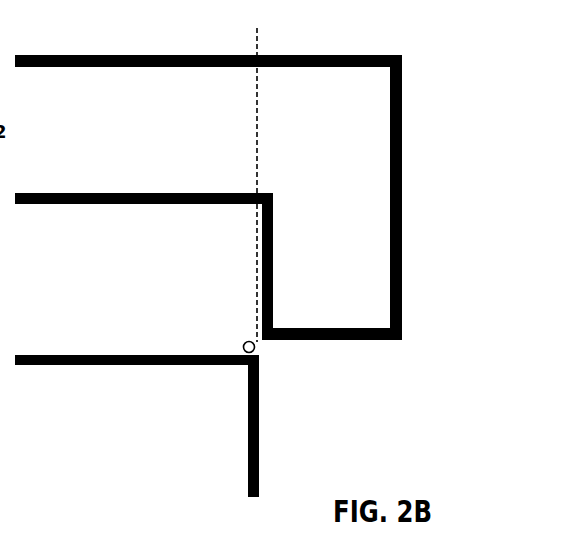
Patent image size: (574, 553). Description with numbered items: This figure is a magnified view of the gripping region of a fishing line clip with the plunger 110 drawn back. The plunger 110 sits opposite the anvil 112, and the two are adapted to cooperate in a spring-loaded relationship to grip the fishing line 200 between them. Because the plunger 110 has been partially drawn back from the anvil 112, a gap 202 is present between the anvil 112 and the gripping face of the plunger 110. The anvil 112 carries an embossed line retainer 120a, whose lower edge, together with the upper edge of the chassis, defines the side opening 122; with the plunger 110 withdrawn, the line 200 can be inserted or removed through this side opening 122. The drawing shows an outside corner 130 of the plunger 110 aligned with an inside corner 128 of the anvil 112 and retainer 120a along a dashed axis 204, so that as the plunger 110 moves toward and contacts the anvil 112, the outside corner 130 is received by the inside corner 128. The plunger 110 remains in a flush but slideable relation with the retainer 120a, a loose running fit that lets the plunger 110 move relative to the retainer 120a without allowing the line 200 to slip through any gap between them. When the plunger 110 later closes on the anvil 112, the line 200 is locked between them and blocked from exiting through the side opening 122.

The plunger 110 is at (140, 404).
The anvil 112 is at (140, 168).
The embossed line retainer 120a is at (357, 274).
The side opening 122 is at (303, 486).
The inside corner 128 is at (238, 217).
The outside corner 130 is at (234, 390).
The fishing line 200 is at (254, 351).
The gap 202 is at (140, 282).
The axis 204 is at (258, 44).